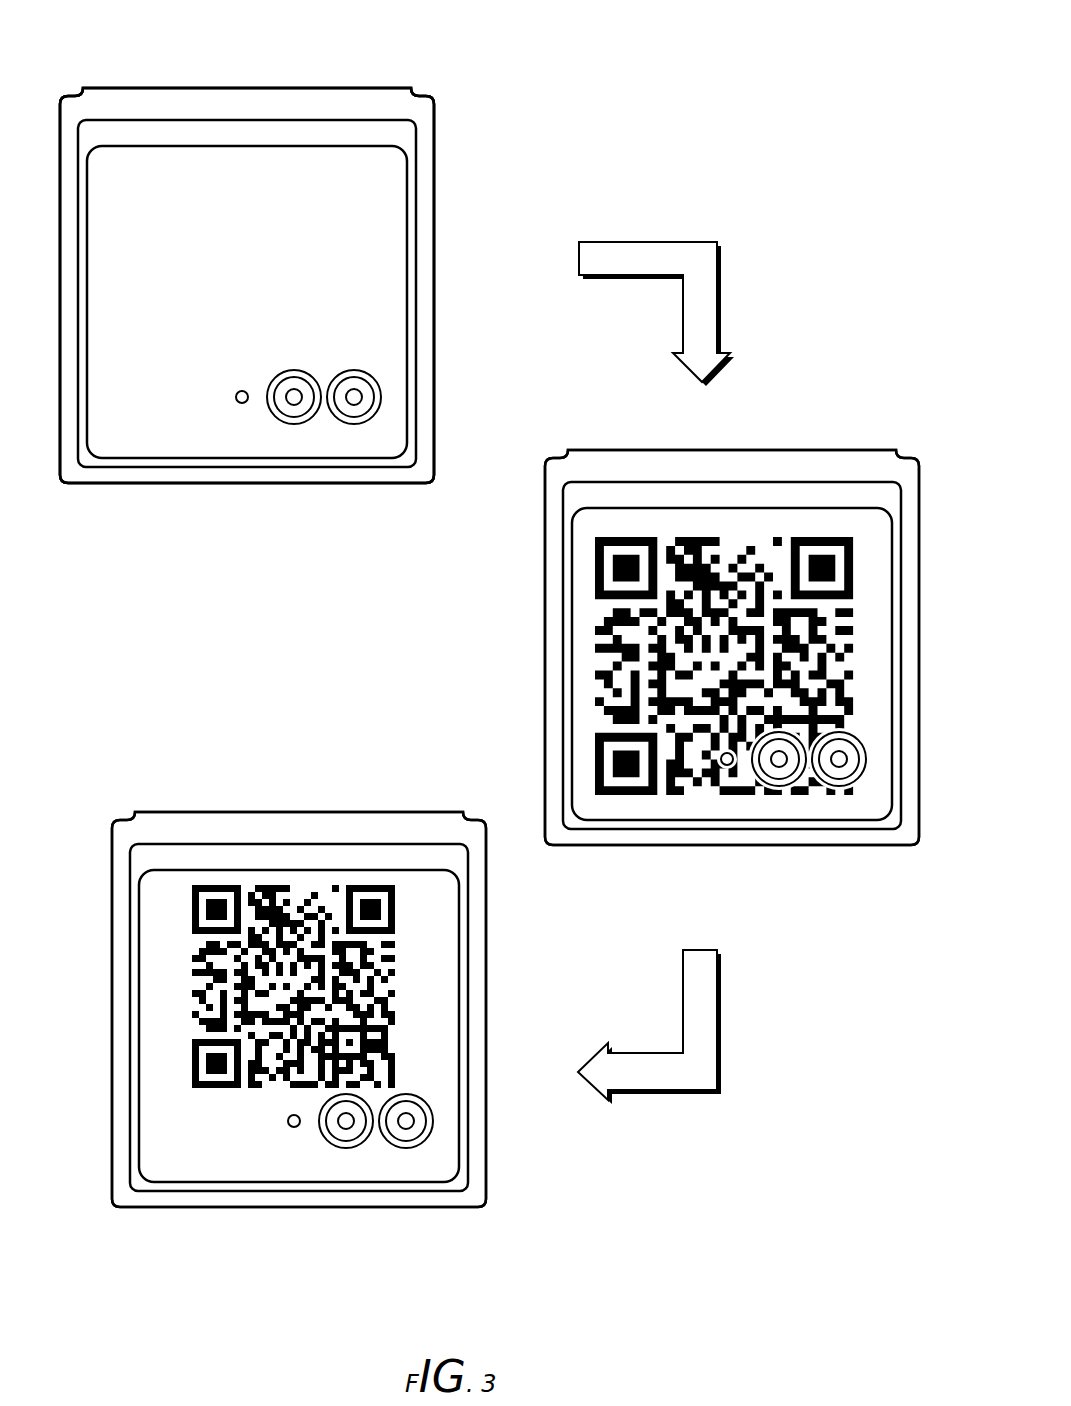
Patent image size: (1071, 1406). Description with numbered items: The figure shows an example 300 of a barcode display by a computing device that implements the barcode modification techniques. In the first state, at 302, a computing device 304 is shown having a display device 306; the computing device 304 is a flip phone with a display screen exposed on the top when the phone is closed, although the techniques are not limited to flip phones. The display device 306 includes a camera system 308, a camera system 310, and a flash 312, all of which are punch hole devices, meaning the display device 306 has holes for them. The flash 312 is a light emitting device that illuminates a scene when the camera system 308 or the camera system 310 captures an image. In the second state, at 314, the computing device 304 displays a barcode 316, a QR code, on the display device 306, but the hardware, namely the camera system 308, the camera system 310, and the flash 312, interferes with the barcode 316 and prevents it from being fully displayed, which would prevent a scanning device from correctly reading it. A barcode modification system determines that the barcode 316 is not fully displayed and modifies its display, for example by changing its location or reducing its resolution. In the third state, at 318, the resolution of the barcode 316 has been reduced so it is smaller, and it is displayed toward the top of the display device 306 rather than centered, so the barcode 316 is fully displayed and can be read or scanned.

The example of a barcode display 300 is at (826, 78).
The first illustrated state 302 is at (430, 78).
The computing device 304 is at (150, 86).
The display device 306 is at (407, 182).
The camera system 308 is at (357, 424).
The camera system 310 is at (295, 424).
The flash 312 is at (240, 405).
The second illustrated state 314 is at (839, 430).
The barcode 316 is at (595, 540).
The third illustrated state 318 is at (145, 793).